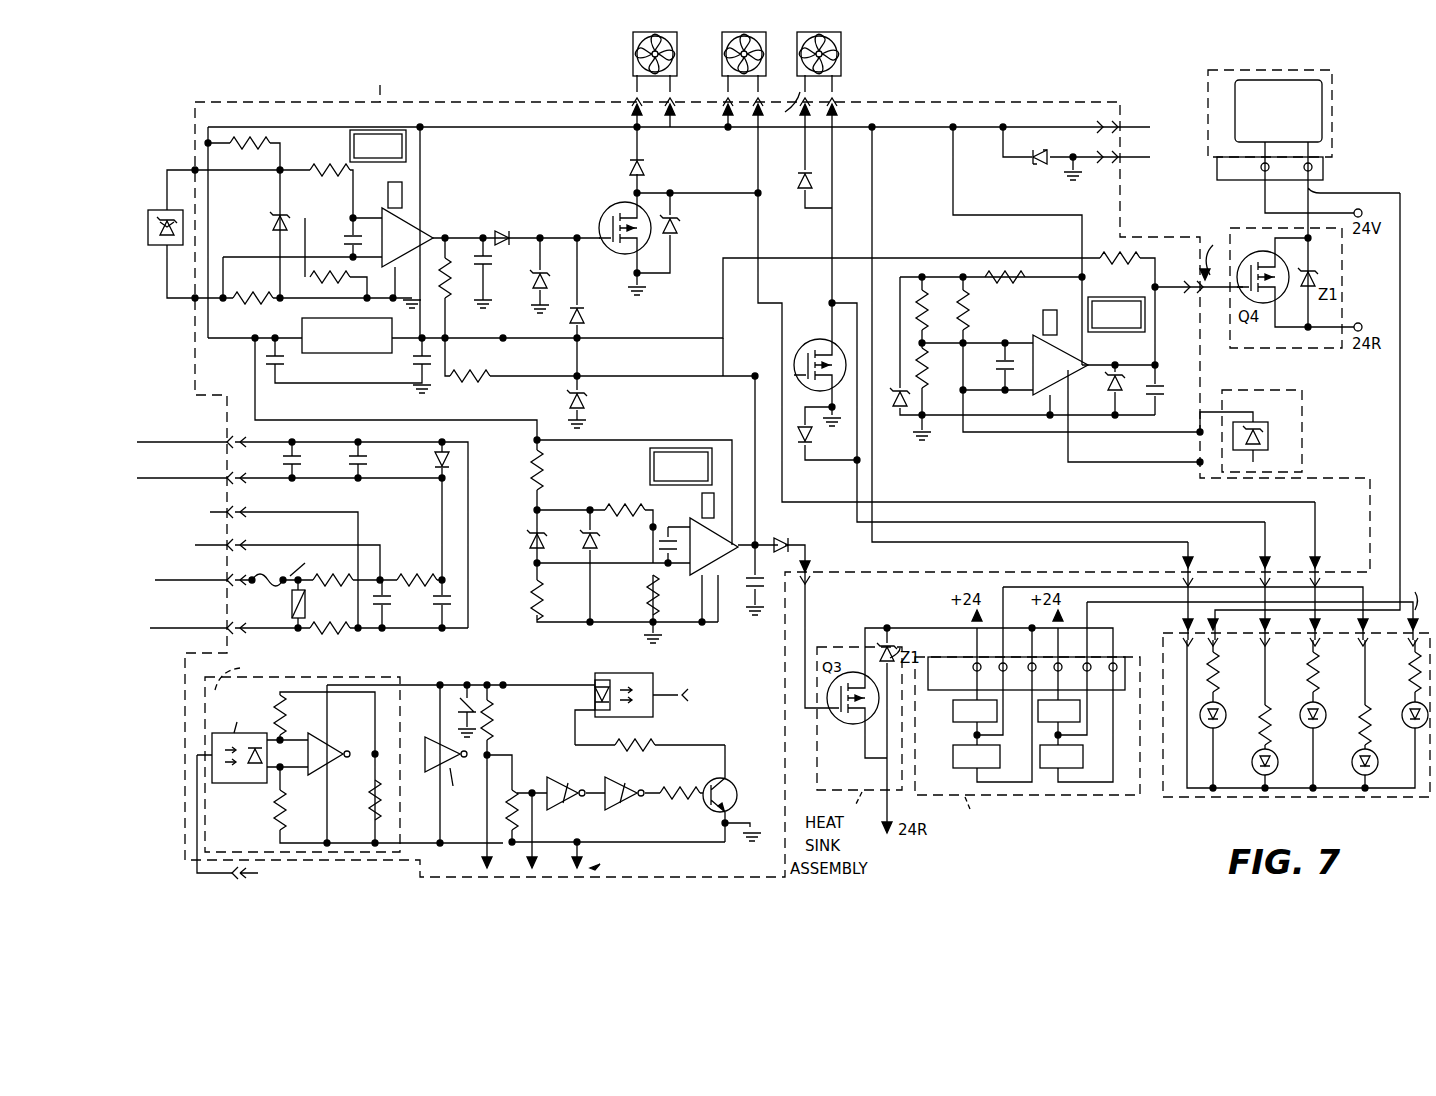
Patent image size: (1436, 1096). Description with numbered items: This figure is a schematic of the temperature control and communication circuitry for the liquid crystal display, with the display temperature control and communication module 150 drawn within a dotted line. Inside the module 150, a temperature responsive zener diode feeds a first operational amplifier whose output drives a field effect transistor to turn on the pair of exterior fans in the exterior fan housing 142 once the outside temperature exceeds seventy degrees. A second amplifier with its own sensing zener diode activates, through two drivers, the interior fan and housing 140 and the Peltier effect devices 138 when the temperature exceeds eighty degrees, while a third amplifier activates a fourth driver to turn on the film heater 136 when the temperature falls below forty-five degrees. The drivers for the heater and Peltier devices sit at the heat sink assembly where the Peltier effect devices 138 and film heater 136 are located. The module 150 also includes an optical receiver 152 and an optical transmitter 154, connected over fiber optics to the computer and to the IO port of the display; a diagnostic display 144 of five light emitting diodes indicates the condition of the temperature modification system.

The film heater 136 is at (1333, 116).
The Peltier effect devices 138 is at (1115, 797).
The fan and housing 140 is at (841, 50).
The exterior fan housing 142 is at (722, 45).
The display 144 is at (1232, 800).
The display temperature control and communication module 150 is at (776, 466).
The optical receiver 152 is at (385, 667).
The optical transmitter 154 is at (691, 677).